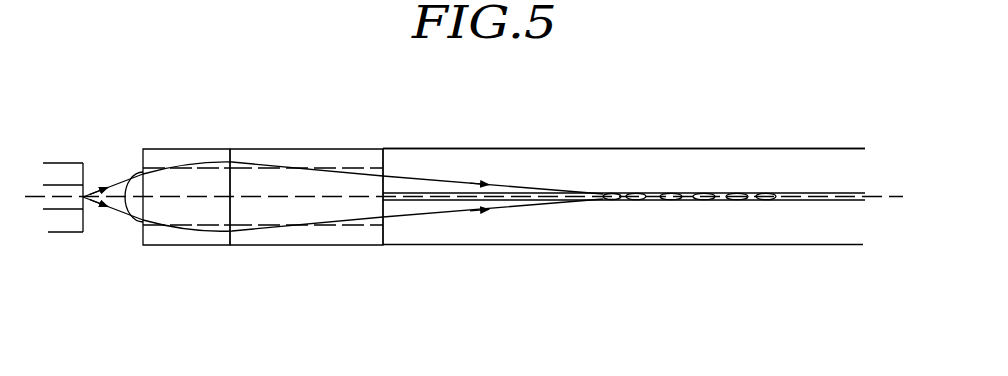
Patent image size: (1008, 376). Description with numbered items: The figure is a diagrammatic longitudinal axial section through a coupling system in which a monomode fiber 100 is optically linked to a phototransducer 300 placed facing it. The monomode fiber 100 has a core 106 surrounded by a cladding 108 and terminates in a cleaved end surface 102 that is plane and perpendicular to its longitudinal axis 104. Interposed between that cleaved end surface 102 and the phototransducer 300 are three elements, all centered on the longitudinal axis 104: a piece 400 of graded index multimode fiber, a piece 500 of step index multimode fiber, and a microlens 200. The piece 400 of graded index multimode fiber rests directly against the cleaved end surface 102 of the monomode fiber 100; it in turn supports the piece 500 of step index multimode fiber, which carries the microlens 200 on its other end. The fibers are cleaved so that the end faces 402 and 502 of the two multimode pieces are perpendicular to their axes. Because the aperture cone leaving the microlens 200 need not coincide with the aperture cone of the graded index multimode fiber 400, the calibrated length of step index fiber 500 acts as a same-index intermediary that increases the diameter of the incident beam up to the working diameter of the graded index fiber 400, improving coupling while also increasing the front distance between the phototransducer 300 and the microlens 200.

The monomode fiber 100 is at (643, 177).
The cleaved end surface 102 is at (383, 154).
The longitudinal axis 104 is at (892, 198).
The core 106 is at (662, 201).
The cladding 108 is at (702, 155).
The microlens 200 is at (137, 188).
The phototransducer 300 is at (63, 172).
The piece of graded index multimode fiber 400 is at (325, 233).
The end face 402 is at (230, 157).
The piece of step index multimode fiber 500 is at (177, 246).
The end face 502 is at (143, 231).